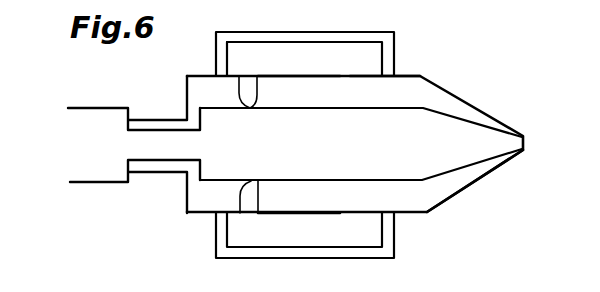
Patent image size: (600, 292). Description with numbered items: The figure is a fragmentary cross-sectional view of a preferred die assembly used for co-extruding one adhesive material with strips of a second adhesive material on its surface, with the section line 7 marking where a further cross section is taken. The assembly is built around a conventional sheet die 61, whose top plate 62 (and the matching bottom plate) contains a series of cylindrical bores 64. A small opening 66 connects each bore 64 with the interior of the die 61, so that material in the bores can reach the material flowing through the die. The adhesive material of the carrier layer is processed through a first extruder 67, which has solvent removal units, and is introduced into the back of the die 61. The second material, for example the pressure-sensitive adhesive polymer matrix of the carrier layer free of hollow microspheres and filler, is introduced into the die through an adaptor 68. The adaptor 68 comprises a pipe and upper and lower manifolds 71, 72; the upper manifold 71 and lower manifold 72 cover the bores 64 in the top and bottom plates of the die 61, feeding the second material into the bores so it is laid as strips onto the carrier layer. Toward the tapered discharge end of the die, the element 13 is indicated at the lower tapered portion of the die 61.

The section line 7- 7 is at (206, 61).
The tapered tip 13 is at (423, 194).
The sheet die 61 is at (457, 92).
The top plate 62 is at (413, 74).
The cylindrical bores 64 is at (252, 201).
The small opening 66 is at (252, 108).
The first extruder 67 is at (94, 110).
The adaptor 68 is at (313, 30).
The upper manifold 71 is at (237, 34).
The lower manifold 72 is at (297, 254).